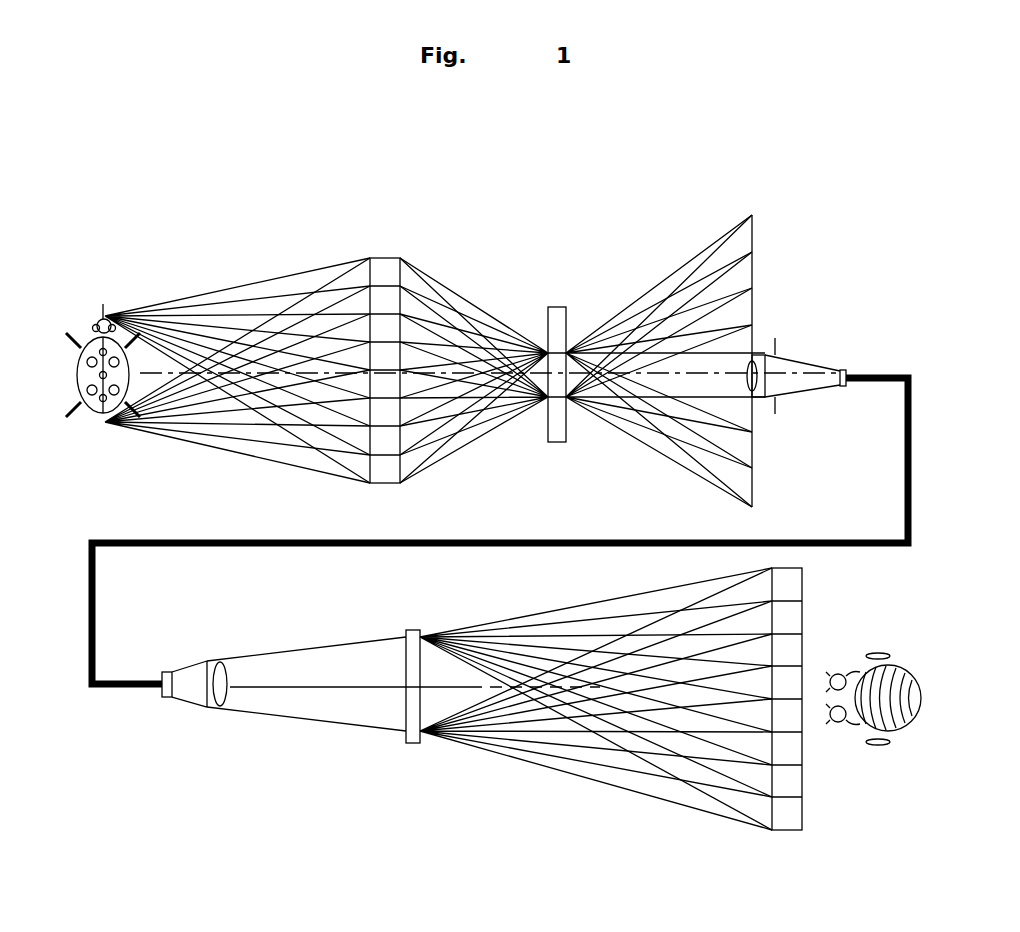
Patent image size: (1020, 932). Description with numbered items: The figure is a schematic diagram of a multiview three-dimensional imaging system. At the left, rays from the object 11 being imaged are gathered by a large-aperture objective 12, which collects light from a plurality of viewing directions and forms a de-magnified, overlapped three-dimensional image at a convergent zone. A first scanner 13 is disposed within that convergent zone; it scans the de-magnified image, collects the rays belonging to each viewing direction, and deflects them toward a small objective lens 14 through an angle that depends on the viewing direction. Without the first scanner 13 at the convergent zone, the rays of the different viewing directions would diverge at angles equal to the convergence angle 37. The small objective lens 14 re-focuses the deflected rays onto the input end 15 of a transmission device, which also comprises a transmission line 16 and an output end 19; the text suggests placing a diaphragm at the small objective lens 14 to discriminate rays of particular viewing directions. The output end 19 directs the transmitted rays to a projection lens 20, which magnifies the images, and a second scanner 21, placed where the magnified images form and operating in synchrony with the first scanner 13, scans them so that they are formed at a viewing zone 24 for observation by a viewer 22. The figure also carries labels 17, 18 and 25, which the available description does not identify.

The object (ladybug) 11 is at (105, 312).
The large-aperture objective 12 is at (387, 252).
The first scanner 13 is at (554, 300).
The small objective lens 14 is at (762, 352).
The input end 15 is at (843, 372).
The transmission line 16 is at (482, 540).
The aperture 17 is at (777, 414).
The light ray 18 is at (370, 318).
The output end 19 is at (168, 672).
The projection lens 20 is at (213, 660).
The second scanner 21 is at (400, 628).
The viewer 22 is at (878, 650).
The viewing zone 24 is at (786, 840).
The light ray 25 is at (615, 395).
The convergence angle 37 is at (520, 340).